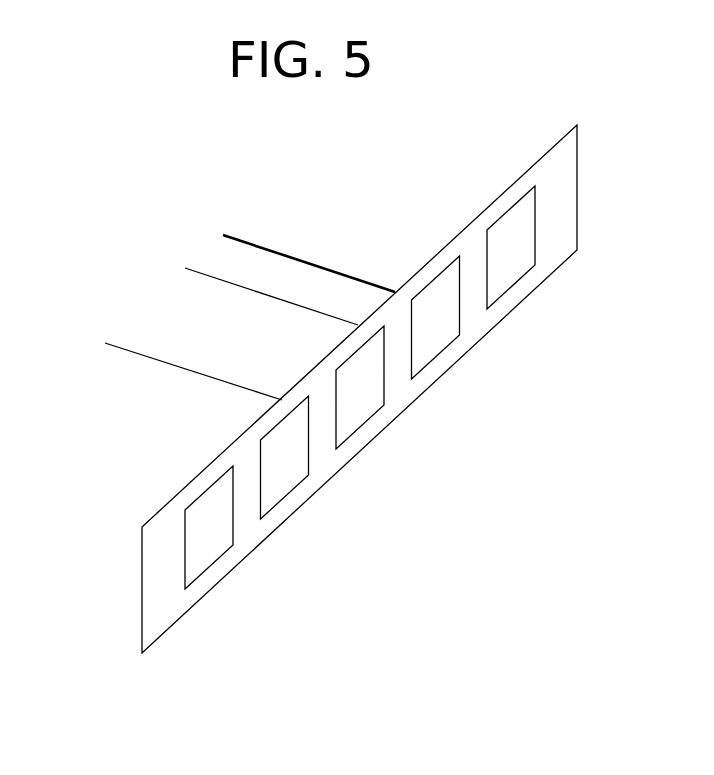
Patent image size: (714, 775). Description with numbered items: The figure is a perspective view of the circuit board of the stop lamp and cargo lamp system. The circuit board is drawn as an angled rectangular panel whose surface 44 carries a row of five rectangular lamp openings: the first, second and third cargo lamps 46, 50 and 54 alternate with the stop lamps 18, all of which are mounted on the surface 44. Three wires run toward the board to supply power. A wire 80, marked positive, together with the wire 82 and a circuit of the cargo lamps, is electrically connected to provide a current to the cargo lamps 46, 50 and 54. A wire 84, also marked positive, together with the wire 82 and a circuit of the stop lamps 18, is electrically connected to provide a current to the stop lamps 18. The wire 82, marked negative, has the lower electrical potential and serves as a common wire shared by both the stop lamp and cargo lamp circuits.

The stop lamps 18 is at (287, 480).
The surface 44 is at (163, 610).
The first cargo lamp 46 is at (208, 551).
The second cargo lamp 50 is at (362, 410).
The third cargo lamp 54 is at (512, 270).
The wire 80 is at (122, 348).
The wire 82 is at (240, 238).
The wire 84 is at (200, 270).